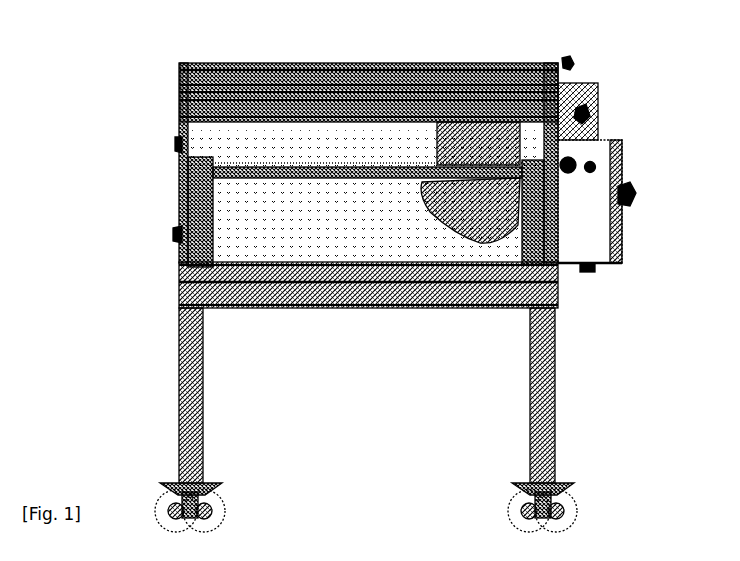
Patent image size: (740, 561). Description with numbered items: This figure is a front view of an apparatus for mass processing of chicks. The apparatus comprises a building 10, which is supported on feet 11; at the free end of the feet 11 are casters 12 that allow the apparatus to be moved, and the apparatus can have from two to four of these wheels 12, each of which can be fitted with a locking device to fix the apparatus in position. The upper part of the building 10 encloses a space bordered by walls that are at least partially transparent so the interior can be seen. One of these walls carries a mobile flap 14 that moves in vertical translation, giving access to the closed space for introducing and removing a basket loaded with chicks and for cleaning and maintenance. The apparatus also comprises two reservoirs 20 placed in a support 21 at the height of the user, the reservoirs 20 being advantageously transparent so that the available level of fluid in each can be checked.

The building 10 is at (158, 131).
The feet 11 is at (557, 361).
The casters 12 is at (577, 512).
The mobile flap 14 is at (176, 225).
The reservoirs 20 is at (340, 68).
The support 21 is at (386, 308).